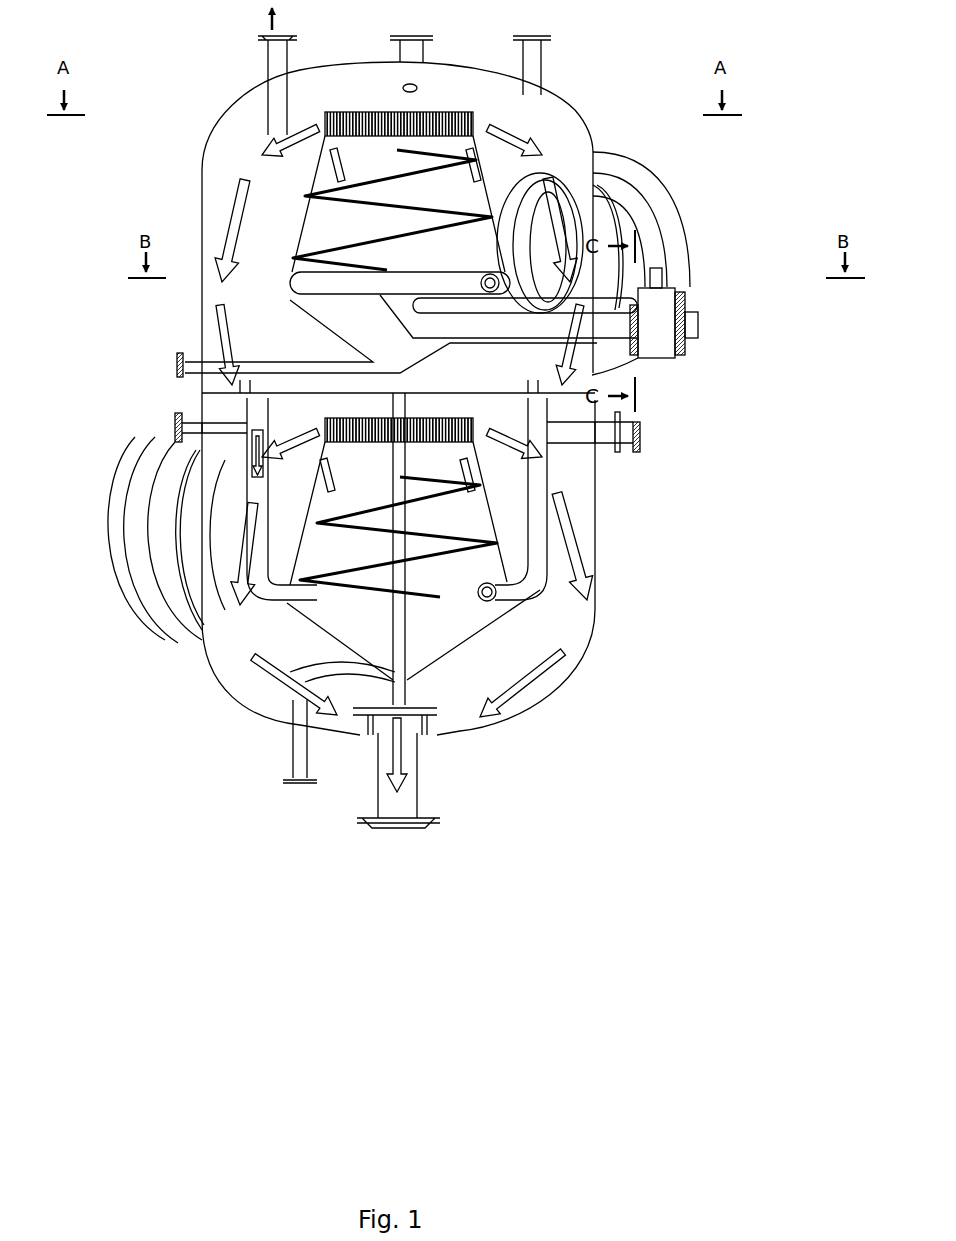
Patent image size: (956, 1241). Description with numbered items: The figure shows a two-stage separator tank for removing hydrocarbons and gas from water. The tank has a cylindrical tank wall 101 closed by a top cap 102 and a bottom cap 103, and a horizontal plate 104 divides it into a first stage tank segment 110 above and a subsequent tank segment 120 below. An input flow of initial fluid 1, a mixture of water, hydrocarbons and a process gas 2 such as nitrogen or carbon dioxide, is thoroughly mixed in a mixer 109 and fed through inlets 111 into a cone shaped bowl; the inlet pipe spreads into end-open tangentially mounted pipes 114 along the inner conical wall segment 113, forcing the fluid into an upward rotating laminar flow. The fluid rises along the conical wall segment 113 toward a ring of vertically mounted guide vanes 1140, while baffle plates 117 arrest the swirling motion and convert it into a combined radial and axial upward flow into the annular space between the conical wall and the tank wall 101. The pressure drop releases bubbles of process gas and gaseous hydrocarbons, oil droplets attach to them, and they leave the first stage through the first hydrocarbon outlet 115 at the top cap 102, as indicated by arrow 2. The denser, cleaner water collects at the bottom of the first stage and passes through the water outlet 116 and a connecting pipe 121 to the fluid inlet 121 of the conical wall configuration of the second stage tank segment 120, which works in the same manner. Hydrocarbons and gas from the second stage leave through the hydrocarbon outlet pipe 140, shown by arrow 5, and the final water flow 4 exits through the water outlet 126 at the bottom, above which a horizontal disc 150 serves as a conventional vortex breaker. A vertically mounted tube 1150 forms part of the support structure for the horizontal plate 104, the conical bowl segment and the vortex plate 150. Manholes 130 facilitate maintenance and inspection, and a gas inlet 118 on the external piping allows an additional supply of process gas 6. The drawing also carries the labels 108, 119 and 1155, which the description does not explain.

The initial fluid 1 is at (706, 326).
The process gas 2 is at (656, 264).
The final water flow 4 is at (396, 835).
The outlet flow of process gas and hydrocarbons 5 is at (648, 438).
The additional supply of process gas 6 is at (172, 428).
The cylindrical tank wall 101 is at (204, 188).
The top cap 102 is at (214, 118).
The bottom cap 103 is at (232, 688).
The horizontal plate 104 is at (437, 398).
The drain pipe 108 is at (232, 360).
The mixer 109 is at (681, 291).
The first stage tank segment 110 is at (411, 219).
The inlets 111 is at (553, 310).
The conical wall segment 113 is at (318, 199).
The tangentially mounted pipes 114 is at (397, 268).
The first hydrocarbon outlet 115 is at (264, 65).
The water outlet 116 is at (262, 393).
The baffle plates 117 is at (328, 170).
The gas inlet 118 is at (180, 357).
The inlet connector body 119 is at (658, 333).
The subsequent tank segment 120 is at (555, 630).
The pipe and fluid inlet 121 is at (250, 485).
The water outlet 126 is at (376, 767).
The manholes 130 is at (694, 250).
The hydrocarbon outlet pipe 140 is at (607, 447).
The horizontal disc vortex breaker 150 is at (466, 707).
The guide vanes 1140 is at (372, 110).
The vertically mounted tube 1150 is at (390, 548).
The downward flow arrow 1155 is at (249, 230).